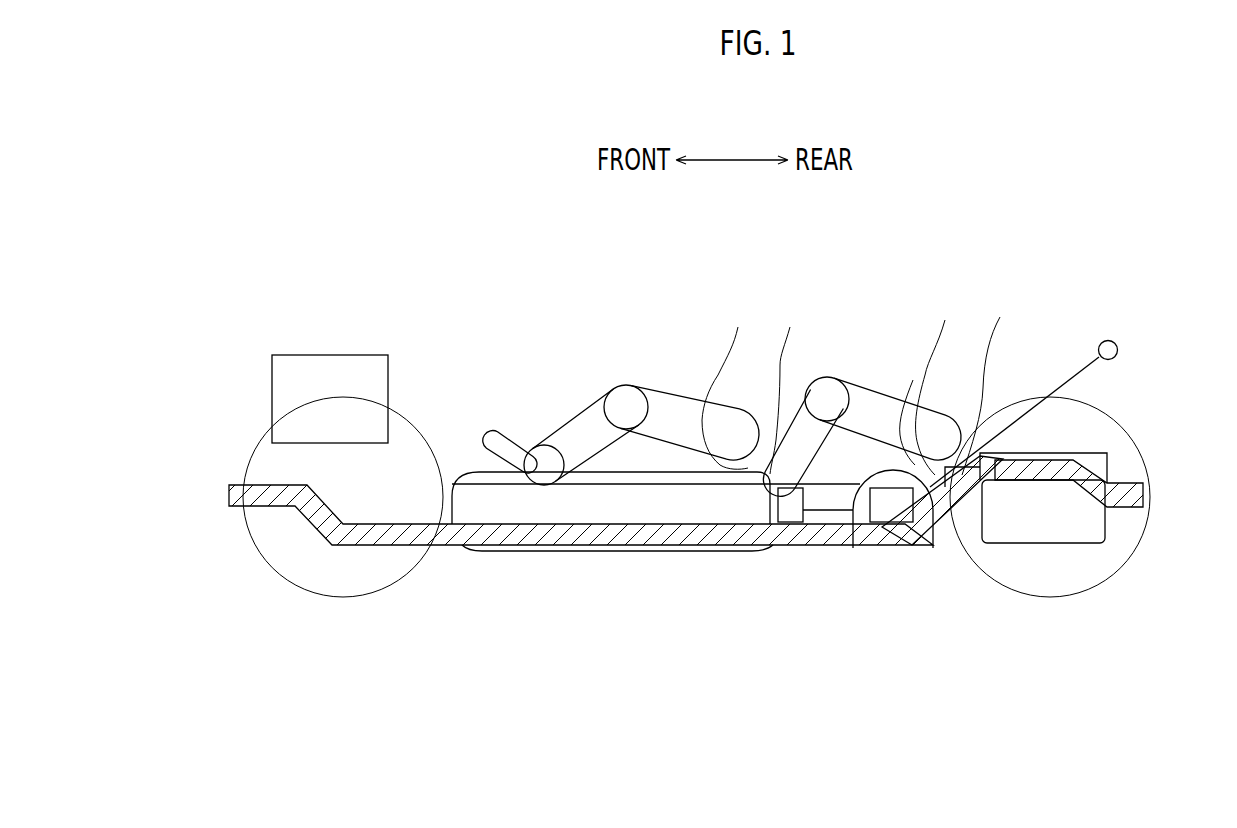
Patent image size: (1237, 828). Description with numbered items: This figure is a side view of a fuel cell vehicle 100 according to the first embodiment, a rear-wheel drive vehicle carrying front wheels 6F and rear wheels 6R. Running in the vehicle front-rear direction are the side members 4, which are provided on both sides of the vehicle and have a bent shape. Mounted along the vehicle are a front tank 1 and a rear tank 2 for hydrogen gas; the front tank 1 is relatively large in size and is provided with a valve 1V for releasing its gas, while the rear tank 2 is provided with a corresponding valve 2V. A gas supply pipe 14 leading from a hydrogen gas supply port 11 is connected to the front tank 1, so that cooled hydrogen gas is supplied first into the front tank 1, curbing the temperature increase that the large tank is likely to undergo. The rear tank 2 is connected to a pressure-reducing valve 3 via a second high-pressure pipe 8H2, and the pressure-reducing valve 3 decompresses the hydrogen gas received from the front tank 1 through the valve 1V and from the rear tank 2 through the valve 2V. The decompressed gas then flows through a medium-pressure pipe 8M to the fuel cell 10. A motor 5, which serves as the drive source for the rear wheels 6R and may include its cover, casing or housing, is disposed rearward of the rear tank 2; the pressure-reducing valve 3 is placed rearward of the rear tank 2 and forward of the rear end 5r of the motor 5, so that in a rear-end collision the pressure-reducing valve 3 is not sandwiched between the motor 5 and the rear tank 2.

The fuel cell vehicle 100 is at (277, 337).
The fuel cell 10 is at (343, 368).
The medium-pressure pipe 8M is at (450, 523).
The second high-pressure pipe 8H2 is at (903, 466).
The gas supply pipe 14 is at (1068, 385).
The hydrogen gas supply port 11 is at (1116, 342).
The rear end of the motor 5r is at (1113, 465).
The motor 5 is at (1090, 527).
The rear wheels 6R is at (1048, 598).
The front wheels 6F is at (345, 598).
The side members 4 is at (440, 524).
The front tank 1 is at (630, 507).
The valve 1V is at (784, 505).
The rear tank 2 is at (858, 500).
The valve 2V is at (892, 508).
The pressure-reducing valve 3 is at (962, 492).